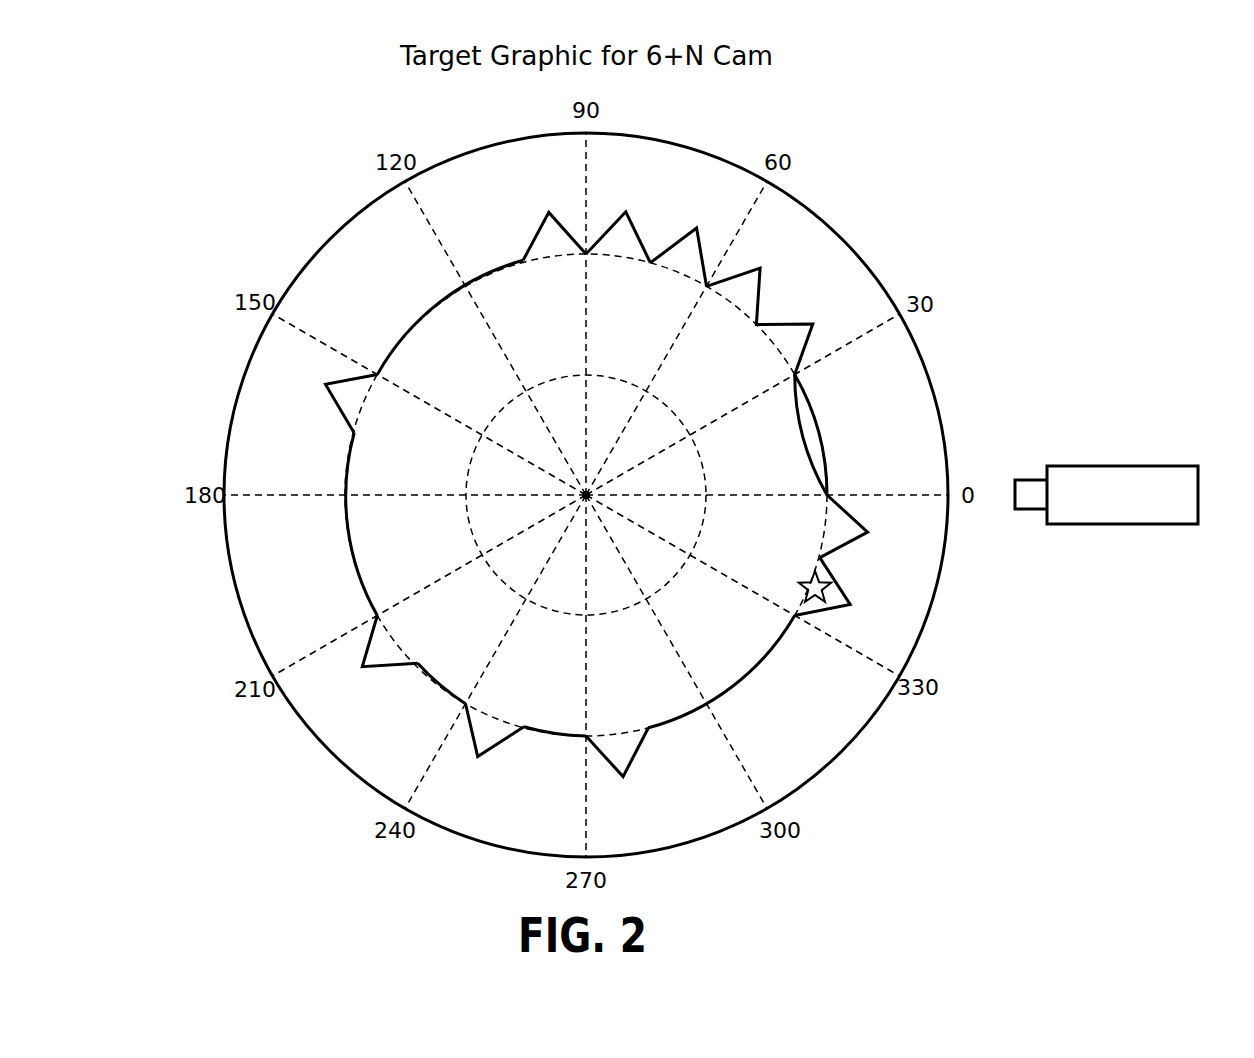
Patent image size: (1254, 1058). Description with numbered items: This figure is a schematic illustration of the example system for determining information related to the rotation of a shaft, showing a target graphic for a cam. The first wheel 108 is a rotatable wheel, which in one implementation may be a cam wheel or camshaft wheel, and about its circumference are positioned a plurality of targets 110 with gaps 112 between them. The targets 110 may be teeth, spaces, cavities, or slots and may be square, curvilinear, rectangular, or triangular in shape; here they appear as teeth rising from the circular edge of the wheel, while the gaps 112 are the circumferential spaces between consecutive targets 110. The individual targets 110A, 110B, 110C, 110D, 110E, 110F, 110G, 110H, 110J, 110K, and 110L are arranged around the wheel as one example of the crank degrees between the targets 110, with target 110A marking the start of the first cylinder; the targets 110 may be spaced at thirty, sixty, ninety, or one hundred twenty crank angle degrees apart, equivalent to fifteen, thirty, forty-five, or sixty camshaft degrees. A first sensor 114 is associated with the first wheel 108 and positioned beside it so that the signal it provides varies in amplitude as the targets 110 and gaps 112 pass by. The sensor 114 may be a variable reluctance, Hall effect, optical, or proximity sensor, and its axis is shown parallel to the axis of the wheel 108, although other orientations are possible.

The first wheel 108 is at (868, 237).
The targets 110 is at (516, 221).
The target 110A is at (902, 582).
The target 110B is at (858, 513).
The target 110C is at (808, 345).
The target 110D is at (760, 285).
The target 110E is at (697, 247).
The target 110F is at (622, 242).
The target 110G is at (560, 243).
The target 110H is at (348, 397).
The target 110J is at (383, 657).
The target 110K is at (493, 728).
The target 110L is at (623, 742).
The gaps 112 is at (770, 660).
The first sensor 114 is at (1112, 466).